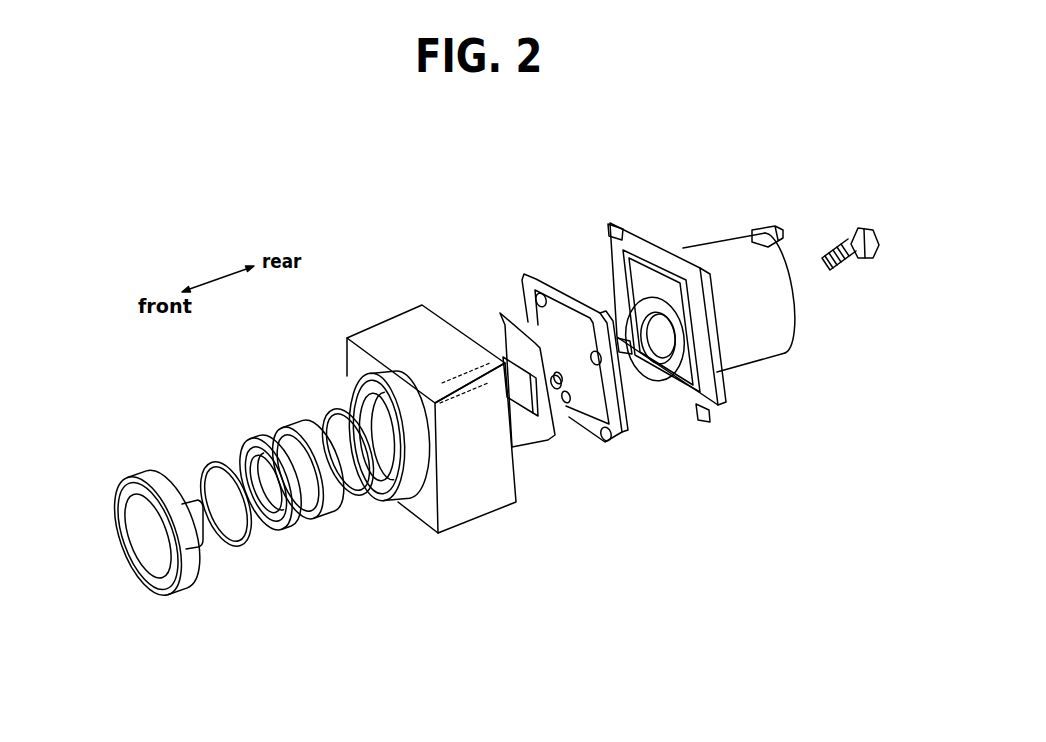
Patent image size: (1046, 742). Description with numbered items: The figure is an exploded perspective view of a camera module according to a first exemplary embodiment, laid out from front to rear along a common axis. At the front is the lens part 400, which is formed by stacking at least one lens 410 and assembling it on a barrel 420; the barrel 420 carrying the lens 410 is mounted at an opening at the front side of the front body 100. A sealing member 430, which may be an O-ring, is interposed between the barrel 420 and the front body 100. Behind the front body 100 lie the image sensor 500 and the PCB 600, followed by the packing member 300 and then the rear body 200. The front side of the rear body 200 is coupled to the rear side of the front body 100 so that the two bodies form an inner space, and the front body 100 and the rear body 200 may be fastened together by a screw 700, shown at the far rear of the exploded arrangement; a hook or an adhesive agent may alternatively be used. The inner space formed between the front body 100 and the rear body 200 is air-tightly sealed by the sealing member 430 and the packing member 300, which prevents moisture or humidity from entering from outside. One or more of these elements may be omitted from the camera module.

The front body 100 is at (478, 484).
The rear body 200 is at (618, 218).
The packing member 300 is at (532, 270).
The lens part 400 is at (327, 396).
The lens 410 is at (187, 535).
The barrel 420 is at (318, 583).
The sealing member 430 is at (243, 550).
The image sensor 500 is at (498, 312).
The PCB 600 is at (547, 442).
The screw 700 is at (856, 232).